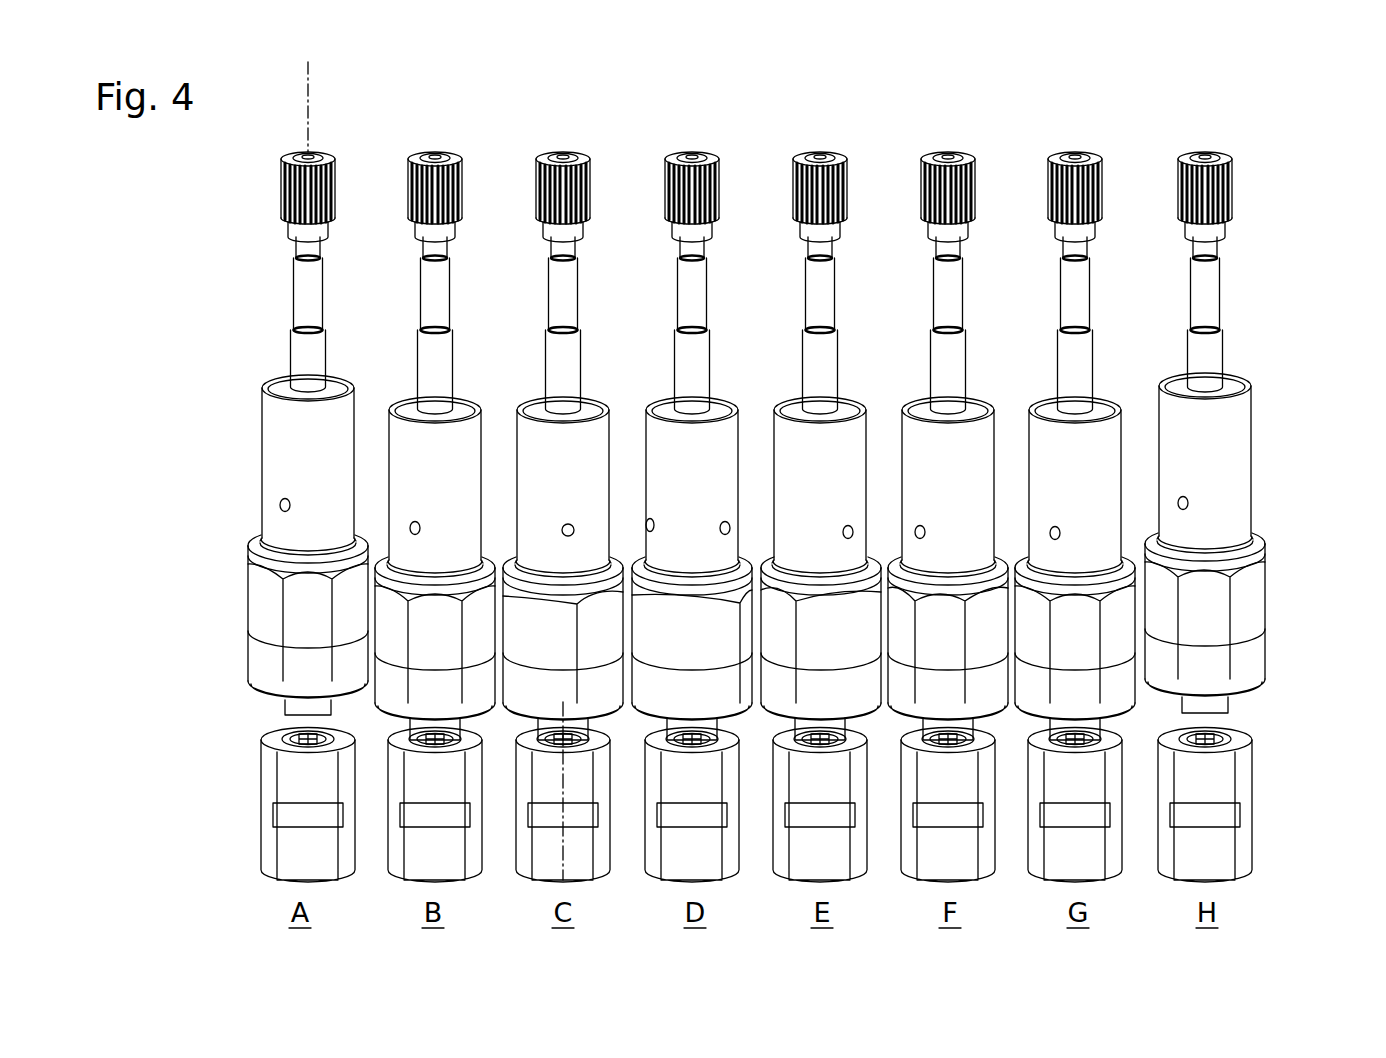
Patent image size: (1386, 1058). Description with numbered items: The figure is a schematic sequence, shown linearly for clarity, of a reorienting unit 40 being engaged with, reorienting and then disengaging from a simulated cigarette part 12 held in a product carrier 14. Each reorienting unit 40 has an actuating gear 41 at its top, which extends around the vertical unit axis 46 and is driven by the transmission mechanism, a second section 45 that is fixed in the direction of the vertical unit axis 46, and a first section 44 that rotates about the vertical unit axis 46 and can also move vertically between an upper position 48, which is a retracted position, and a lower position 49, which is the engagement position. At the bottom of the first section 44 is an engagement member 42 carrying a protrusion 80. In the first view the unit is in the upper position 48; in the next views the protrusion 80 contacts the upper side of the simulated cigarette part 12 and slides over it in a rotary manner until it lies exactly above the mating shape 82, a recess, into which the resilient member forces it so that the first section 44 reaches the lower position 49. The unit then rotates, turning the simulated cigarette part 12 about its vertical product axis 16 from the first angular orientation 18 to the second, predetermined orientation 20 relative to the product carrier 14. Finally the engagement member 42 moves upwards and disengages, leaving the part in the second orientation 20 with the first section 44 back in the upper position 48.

The reorienting unit 40 is at (233, 376).
The actuating gear 41 is at (282, 176).
The engagement member 42 is at (262, 663).
The first section 44 is at (287, 465).
The second section 45 is at (302, 298).
The vertical unit axis 46 is at (309, 90).
The upper position 48 is at (1214, 680).
The lower position 49 is at (757, 741).
The protrusion 80 is at (290, 713).
The mating shape 82 is at (1232, 738).
The simulated cigarette part 12 is at (292, 740).
The product carrier 14 is at (298, 855).
The vertical product axis 16 is at (563, 860).
The first angular orientation 18 is at (297, 752).
The second, predetermined orientation 20 is at (1217, 729).